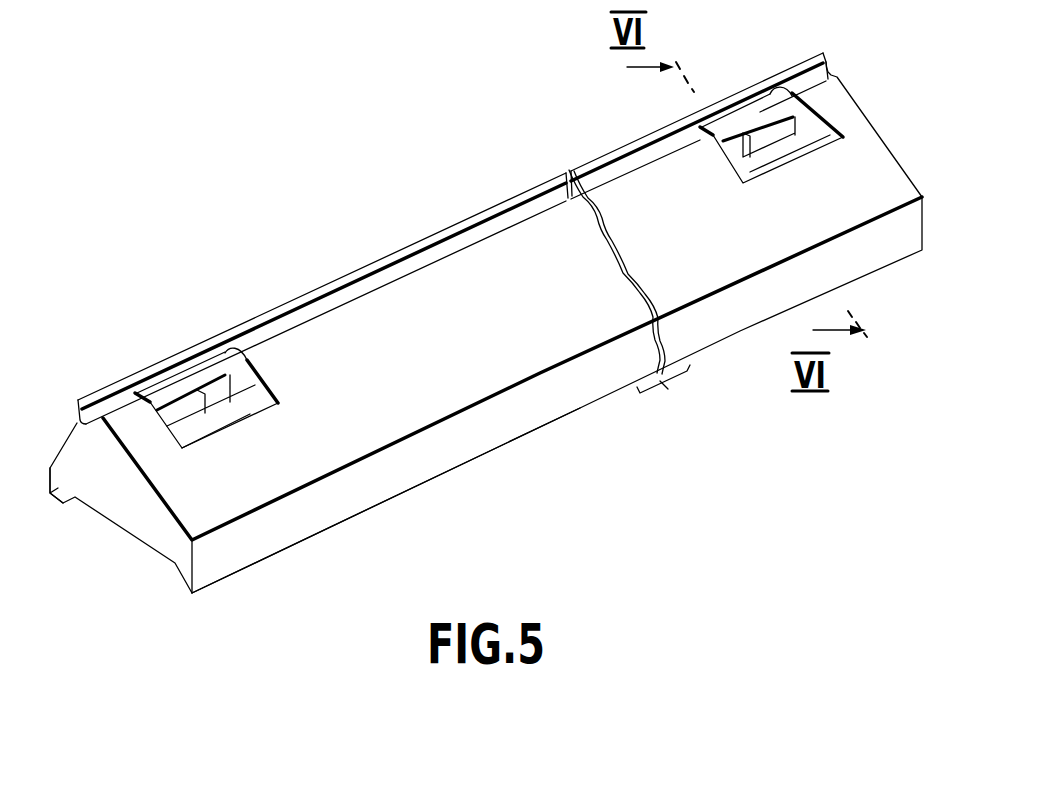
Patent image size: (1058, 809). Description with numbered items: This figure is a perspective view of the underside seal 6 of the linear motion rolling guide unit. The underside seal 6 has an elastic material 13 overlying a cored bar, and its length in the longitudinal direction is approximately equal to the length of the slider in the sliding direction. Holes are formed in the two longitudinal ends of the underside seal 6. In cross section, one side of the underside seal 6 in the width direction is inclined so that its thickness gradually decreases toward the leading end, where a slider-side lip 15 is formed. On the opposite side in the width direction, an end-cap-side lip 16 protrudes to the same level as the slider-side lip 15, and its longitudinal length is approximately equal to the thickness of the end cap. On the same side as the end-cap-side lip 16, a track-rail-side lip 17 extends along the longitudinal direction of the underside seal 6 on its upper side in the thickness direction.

The underside seal 6 is at (470, 327).
The elastic material 13 is at (486, 323).
The slider-side lip 15 is at (233, 560).
The end-cap-side lip 16 is at (50, 493).
The track-rail-side lip 17 is at (337, 295).